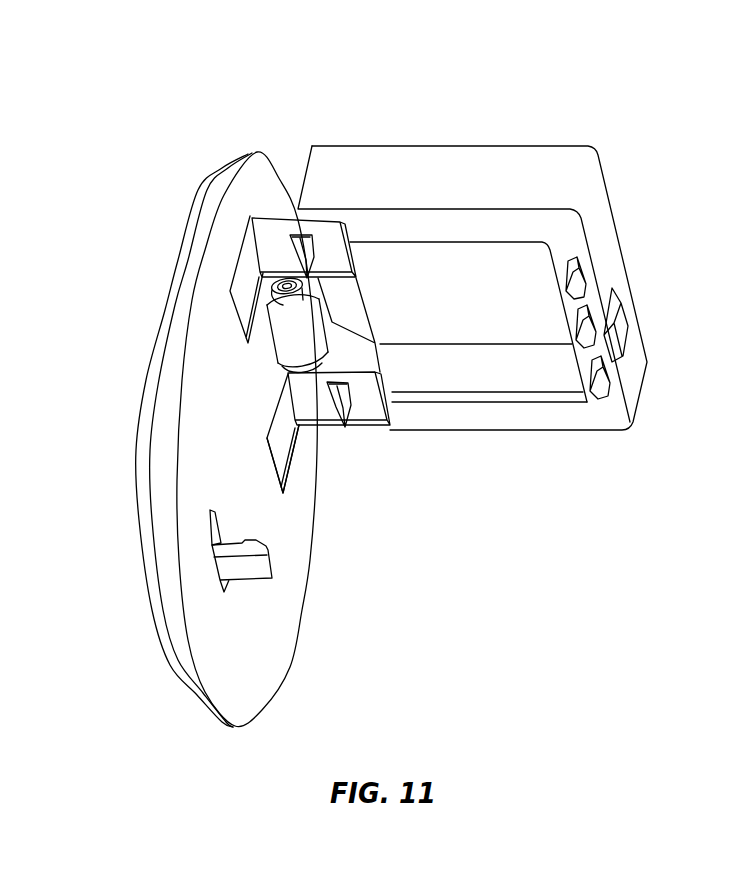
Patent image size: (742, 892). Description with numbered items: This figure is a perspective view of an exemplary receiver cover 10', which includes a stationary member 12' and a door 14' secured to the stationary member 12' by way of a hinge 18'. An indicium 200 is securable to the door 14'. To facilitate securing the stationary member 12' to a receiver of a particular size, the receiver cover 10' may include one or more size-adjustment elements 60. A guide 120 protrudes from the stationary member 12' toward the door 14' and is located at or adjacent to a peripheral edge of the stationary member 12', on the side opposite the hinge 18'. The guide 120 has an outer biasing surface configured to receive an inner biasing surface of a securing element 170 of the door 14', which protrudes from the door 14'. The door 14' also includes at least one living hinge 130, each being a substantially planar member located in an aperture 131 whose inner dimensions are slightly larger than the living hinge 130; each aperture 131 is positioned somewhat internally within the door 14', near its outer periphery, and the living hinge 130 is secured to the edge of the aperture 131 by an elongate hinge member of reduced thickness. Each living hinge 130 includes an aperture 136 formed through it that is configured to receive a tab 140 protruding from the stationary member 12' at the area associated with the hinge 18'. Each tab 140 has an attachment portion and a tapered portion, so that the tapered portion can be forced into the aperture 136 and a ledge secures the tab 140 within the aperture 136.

The receiver cover 10' is at (612, 53).
The stationary member 12' is at (488, 272).
The door 14' is at (260, 439).
The hinge 18' is at (313, 121).
The size-adjustment element 60 is at (455, 361).
The guide 120 is at (633, 311).
The living hinge 130 is at (336, 441).
The aperture 131 is at (293, 464).
The aperture 136 is at (315, 259).
The tab 140 is at (314, 245).
The securing element 170 is at (272, 574).
The indicium 200 is at (170, 273).